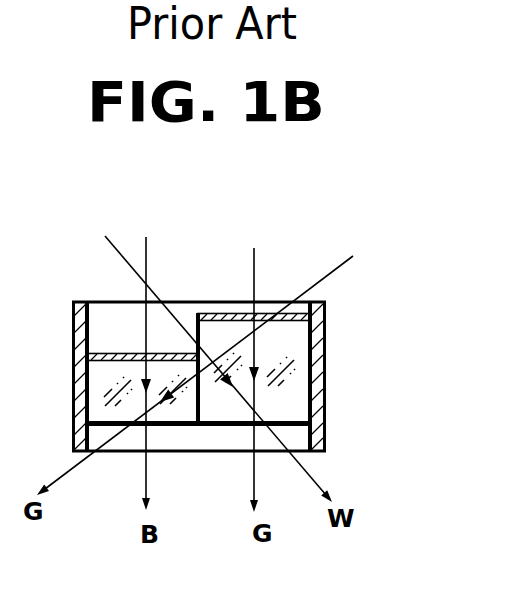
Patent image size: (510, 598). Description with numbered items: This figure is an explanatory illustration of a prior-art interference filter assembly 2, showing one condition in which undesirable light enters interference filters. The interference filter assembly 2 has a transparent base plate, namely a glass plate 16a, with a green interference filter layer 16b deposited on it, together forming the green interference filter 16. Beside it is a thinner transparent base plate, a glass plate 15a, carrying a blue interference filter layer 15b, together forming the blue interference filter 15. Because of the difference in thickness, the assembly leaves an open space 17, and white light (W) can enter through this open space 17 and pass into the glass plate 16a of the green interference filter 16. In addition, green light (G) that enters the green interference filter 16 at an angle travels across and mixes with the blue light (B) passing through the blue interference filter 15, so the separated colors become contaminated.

The interference filter assembly 2 is at (203, 244).
The open space 17 is at (107, 309).
The blue interference filter 15 is at (108, 375).
The glass plate 15a is at (97, 411).
The blue interference filter layer 15b is at (103, 350).
The green interference filter 16 is at (289, 343).
The glass plate 16a is at (292, 405).
The green interference filter layer 16b is at (268, 315).